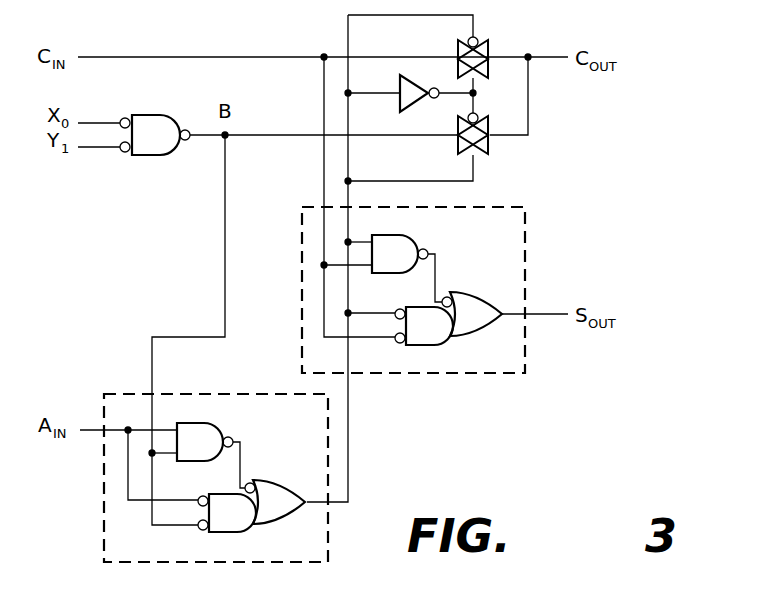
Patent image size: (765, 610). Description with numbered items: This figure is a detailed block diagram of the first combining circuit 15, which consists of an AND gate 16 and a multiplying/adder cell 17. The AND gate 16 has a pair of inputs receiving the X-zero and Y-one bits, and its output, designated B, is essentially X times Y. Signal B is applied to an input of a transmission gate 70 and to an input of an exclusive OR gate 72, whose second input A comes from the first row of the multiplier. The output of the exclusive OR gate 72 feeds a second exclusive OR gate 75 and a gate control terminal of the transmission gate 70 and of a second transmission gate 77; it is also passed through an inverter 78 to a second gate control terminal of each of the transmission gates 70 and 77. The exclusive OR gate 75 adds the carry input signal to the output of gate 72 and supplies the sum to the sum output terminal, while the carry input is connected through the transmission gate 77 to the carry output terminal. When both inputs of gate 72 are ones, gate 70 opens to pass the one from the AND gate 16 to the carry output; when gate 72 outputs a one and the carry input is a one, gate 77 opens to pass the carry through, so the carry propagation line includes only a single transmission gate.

The first combining circuit 15 is at (157, 277).
The AND gate 16 is at (177, 115).
The multiplying/adder cell 17 is at (430, 466).
The transmission gate 70 is at (490, 147).
The exclusive OR gate 72 is at (104, 494).
The second exclusive OR gate 75 is at (482, 375).
The second transmission gate 77 is at (490, 45).
The inverter 78 is at (418, 75).